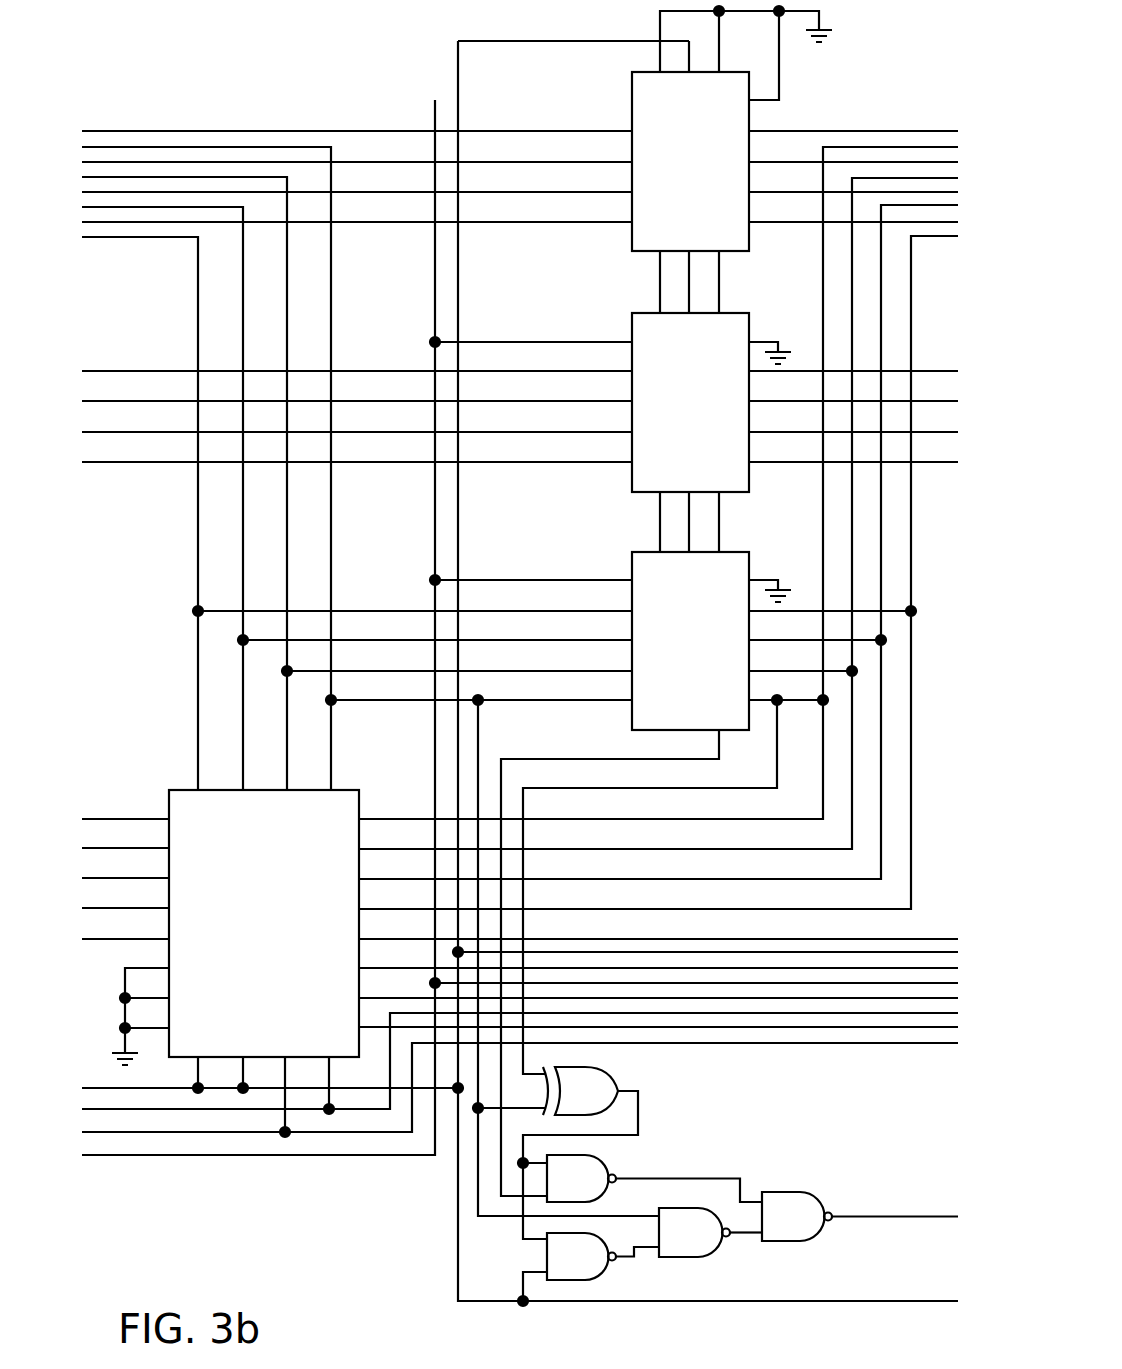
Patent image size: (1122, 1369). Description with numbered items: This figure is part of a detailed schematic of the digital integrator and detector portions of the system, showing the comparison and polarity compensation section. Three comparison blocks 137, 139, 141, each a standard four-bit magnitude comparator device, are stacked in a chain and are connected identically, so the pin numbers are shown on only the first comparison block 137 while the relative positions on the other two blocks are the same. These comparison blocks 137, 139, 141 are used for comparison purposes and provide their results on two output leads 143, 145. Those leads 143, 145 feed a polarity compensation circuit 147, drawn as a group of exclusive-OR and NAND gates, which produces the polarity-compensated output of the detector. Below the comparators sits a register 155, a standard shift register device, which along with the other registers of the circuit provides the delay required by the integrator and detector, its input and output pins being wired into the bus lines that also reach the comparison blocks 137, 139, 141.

The comparison block 137 is at (749, 238).
The comparison block 139 is at (749, 330).
The comparison block 141 is at (749, 568).
The lead 143 is at (537, 759).
The lead 145 is at (777, 752).
The polarity compensation circuit 147 is at (738, 1137).
The register 155 is at (185, 789).